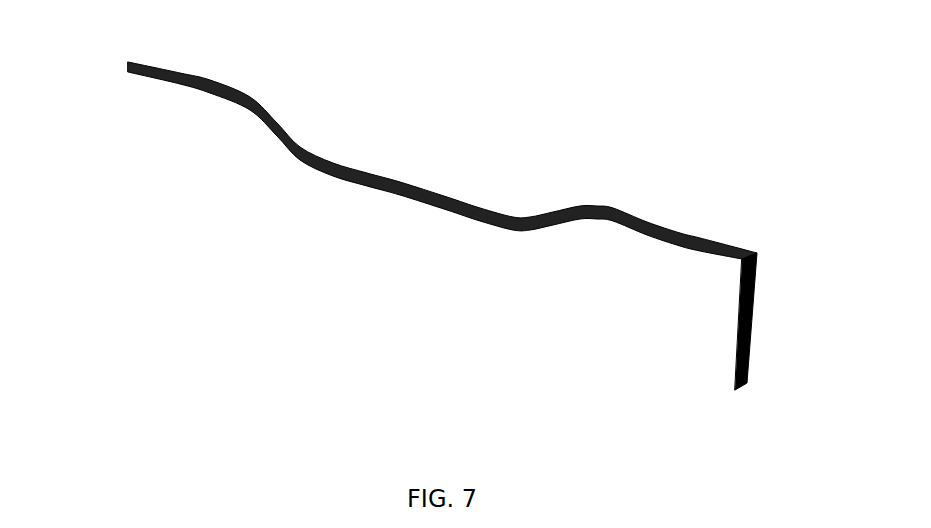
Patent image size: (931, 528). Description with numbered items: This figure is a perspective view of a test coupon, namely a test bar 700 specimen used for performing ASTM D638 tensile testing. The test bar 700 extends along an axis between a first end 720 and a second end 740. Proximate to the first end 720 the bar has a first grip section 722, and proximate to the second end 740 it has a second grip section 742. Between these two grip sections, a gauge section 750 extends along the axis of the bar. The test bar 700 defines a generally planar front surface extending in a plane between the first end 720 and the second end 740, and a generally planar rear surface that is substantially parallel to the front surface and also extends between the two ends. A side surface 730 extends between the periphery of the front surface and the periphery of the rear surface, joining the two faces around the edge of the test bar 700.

The test bar 700 is at (447, 195).
The first end 720 is at (128, 127).
The first grip section 722 is at (153, 152).
The side surface 730 is at (182, 79).
The second end 740 is at (750, 301).
The second grip section 742 is at (700, 320).
The gauge section 750 is at (393, 201).